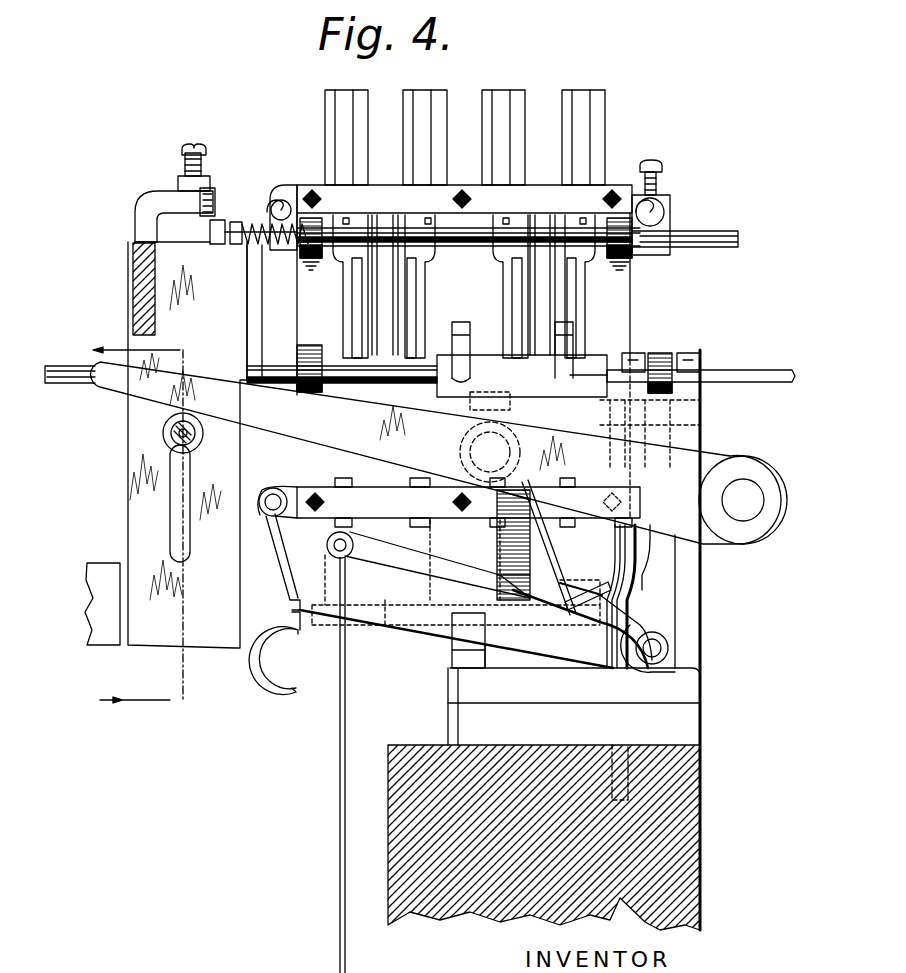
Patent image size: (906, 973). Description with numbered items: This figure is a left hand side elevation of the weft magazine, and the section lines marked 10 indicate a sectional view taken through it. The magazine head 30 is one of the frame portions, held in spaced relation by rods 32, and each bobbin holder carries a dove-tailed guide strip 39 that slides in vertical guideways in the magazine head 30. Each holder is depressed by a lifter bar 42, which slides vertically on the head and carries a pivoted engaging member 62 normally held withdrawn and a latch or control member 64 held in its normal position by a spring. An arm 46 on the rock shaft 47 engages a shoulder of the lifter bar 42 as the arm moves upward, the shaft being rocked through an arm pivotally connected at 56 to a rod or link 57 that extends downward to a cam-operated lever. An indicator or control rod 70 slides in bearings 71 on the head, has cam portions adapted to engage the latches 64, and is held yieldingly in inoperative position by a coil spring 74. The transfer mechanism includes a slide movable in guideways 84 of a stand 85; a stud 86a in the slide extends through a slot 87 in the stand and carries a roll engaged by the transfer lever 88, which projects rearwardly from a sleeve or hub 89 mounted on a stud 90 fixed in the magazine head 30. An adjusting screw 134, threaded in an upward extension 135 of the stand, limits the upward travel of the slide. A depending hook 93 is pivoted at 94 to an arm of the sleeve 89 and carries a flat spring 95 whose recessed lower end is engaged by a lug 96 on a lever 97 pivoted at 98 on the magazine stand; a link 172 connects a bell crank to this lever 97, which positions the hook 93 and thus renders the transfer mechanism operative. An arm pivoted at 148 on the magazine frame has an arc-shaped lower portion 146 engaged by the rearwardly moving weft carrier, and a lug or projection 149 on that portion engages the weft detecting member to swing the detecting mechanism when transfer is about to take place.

The section line 10 is at (138, 527).
The magazine head 30 is at (690, 592).
The rods 32 is at (655, 213).
The dove-tailed guide strip 39 is at (330, 148).
The lifter bar 42 is at (346, 165).
The arm 46 is at (566, 345).
The rock shaft 47 is at (282, 370).
The pivotal connection 56 is at (644, 358).
The rod or link 57 is at (628, 596).
The engaging member 62 is at (354, 292).
The latch or control member 64 is at (392, 310).
The indicator or control rod 70 is at (529, 225).
The bearings 71 is at (297, 262).
The coil spring 74 is at (228, 230).
The guideways 84 is at (222, 602).
The stand 85 is at (163, 440).
The stud 86a is at (192, 430).
The slot 87 is at (188, 470).
The transfer lever 88 is at (123, 378).
The sleeve or hub 89 is at (735, 474).
The stud 90 is at (748, 522).
The depending hook 93 is at (505, 532).
The pivot 94 is at (494, 440).
The flat spring 95 is at (560, 553).
The lug 96 is at (580, 598).
The lever 97 is at (395, 540).
The pivot 98 is at (462, 634).
The adjusting screw 134 is at (188, 149).
The upward extension 135 is at (150, 193).
The arc-shaped lower portion 146 is at (272, 690).
The pivot 148 is at (279, 209).
The lug or projection 149 is at (280, 560).
The link 172 is at (340, 782).